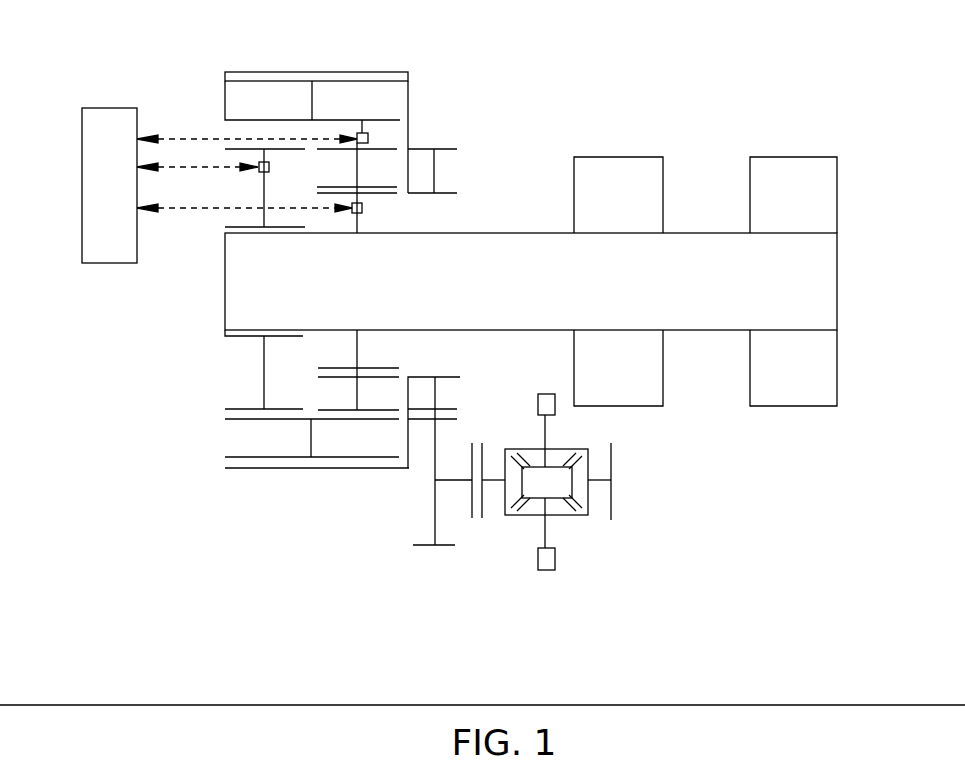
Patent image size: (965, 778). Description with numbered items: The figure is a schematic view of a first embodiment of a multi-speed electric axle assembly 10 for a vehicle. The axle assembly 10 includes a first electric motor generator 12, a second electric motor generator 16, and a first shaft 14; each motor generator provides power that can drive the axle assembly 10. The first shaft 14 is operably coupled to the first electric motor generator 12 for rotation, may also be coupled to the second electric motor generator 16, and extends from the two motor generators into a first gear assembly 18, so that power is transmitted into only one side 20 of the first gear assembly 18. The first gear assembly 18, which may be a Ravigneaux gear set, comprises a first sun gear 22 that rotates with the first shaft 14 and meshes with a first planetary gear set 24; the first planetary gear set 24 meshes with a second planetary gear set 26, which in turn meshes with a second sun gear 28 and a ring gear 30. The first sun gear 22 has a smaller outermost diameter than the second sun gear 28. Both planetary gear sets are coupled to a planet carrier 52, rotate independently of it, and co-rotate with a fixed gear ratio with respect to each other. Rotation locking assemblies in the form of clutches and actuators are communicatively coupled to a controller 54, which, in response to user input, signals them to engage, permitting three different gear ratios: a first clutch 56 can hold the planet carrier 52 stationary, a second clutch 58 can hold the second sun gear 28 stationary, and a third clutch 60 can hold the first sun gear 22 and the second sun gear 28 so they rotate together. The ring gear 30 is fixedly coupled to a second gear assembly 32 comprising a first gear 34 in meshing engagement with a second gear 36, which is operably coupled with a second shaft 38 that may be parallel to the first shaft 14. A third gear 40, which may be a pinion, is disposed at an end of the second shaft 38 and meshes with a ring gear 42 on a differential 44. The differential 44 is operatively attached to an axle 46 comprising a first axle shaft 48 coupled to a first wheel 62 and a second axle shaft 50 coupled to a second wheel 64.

The multi-speed electric axle assembly 10 is at (805, 58).
The first electric motor generator 12 is at (792, 155).
The first shaft 14 is at (826, 283).
The second electric motor generator 16 is at (620, 155).
The first gear assembly 18 is at (175, 393).
The side 20 is at (358, 142).
The first sun gear 22 is at (358, 222).
The first planetary gear set 24 is at (357, 167).
The second planetary gear set 26 is at (335, 118).
The second sun gear 28 is at (263, 200).
The ring gear 30 is at (277, 72).
The second gear assembly 32 is at (435, 485).
The first gear 34 is at (437, 402).
The second gear 36 is at (425, 547).
The second shaft 38 is at (440, 478).
The third gear 40 is at (472, 503).
The ring gear 42 is at (613, 500).
The differential 44 is at (596, 567).
The axle 46 is at (577, 489).
The first axle shaft 48 is at (543, 522).
The second axle shaft 50 is at (548, 442).
The planet carrier 52 is at (367, 130).
The controller 54 is at (97, 200).
The first clutch 56 is at (403, 147).
The second clutch 58 is at (262, 163).
The third clutch 60 is at (357, 213).
The first wheel 62 is at (552, 570).
The second wheel 64 is at (538, 396).